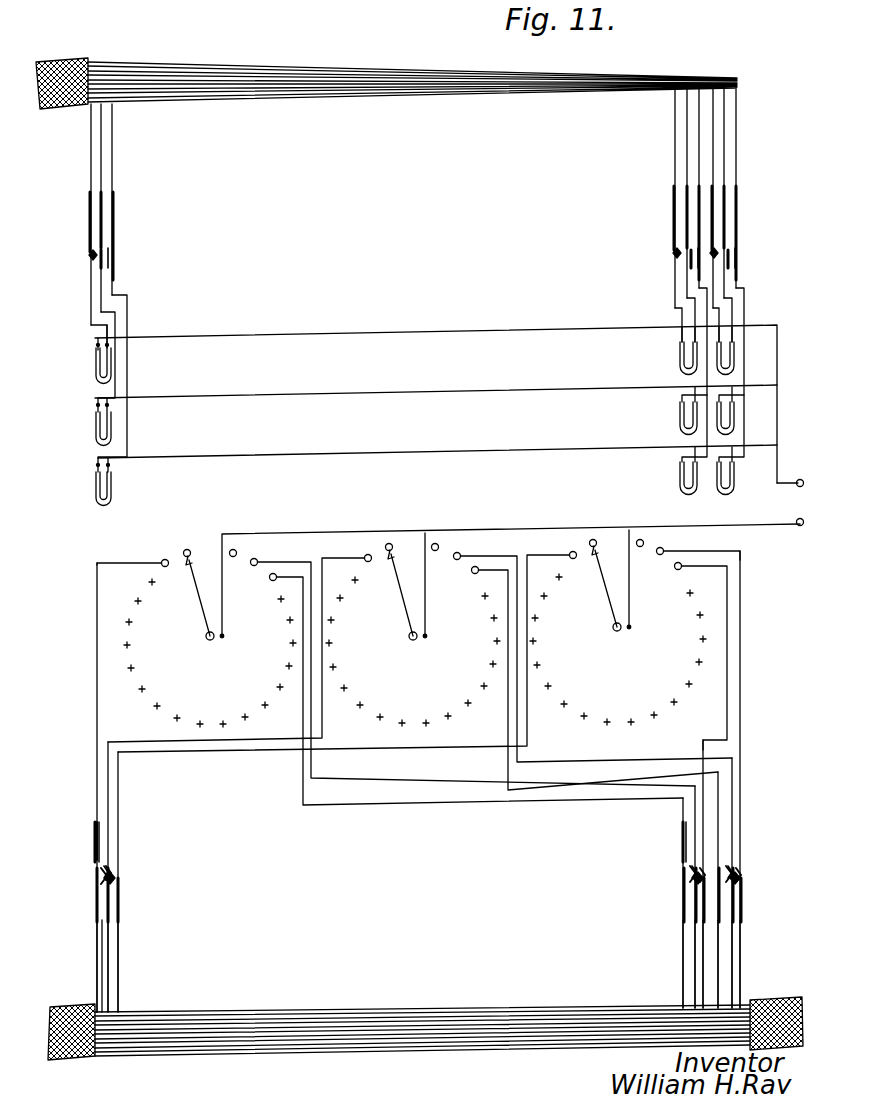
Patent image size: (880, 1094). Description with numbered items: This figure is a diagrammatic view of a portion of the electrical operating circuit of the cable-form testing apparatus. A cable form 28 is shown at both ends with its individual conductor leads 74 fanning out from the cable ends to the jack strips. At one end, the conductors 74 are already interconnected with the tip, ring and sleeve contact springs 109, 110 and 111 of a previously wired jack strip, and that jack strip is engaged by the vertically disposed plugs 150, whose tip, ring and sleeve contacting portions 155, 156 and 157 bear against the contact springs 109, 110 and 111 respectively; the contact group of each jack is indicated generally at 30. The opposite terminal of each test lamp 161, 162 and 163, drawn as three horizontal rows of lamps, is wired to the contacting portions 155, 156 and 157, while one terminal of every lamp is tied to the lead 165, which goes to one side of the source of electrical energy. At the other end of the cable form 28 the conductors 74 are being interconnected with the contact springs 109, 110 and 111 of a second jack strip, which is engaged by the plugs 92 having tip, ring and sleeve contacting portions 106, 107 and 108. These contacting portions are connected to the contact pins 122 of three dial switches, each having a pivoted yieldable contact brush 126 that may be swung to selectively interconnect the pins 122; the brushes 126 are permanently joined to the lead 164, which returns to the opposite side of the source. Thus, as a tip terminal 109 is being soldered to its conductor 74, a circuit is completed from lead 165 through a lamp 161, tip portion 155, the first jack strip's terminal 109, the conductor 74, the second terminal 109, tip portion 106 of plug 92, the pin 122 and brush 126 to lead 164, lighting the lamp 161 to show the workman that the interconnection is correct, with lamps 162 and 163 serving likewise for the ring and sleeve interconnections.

The cable form 28 is at (68, 60).
The conductor lead 74 is at (113, 152).
The plug 92 is at (88, 831).
The tip contacting portion 106 is at (115, 878).
The ring contacting portion 107 is at (108, 868).
The sleeve contacting portion 108 is at (100, 842).
The tip contact spring 109 is at (88, 200).
The ring contact spring 110 is at (100, 205).
The sleeve contact spring 111 is at (112, 220).
The switch contact group 30 is at (113, 226).
The contact pin 122 is at (165, 559).
The contact brush 126 is at (198, 600).
The plug 150 is at (119, 270).
The tip contacting portion 155 is at (90, 256).
The ring contacting portion 156 is at (99, 262).
The sleeve contacting portion 157 is at (110, 262).
The test lamp 161 is at (95, 368).
The test lamp 162 is at (95, 428).
The test lamp 163 is at (96, 488).
The lead 164 is at (798, 526).
The lead 165 is at (800, 470).